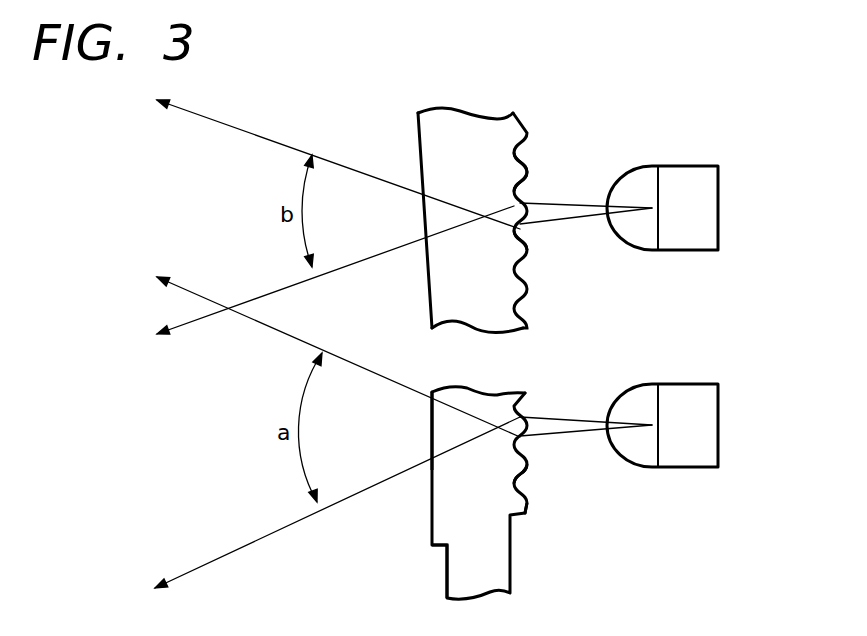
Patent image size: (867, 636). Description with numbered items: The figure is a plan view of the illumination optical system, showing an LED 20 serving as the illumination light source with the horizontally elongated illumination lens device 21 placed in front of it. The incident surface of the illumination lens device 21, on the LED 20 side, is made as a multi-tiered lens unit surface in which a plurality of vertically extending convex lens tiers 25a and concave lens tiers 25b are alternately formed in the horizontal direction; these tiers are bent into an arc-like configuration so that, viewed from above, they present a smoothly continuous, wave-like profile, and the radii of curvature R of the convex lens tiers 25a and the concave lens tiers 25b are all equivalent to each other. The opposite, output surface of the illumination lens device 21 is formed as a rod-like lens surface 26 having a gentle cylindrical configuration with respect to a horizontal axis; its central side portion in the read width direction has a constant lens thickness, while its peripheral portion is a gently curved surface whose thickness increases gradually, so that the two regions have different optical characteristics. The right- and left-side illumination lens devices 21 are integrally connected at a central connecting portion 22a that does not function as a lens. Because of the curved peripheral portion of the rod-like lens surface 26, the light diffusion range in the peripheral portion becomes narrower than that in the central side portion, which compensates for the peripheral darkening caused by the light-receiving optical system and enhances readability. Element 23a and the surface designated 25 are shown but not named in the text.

The LED 20 is at (718, 212).
The illumination lens device 21 is at (425, 510).
The connecting portion 22a is at (445, 575).
The reflecting member 23a is at (417, 147).
The wavy reflecting surface 25 is at (523, 153).
The convex lens tiers 25a is at (528, 173).
The concave lens tiers 25b is at (518, 193).
The rod-like lens surface 26 is at (430, 428).
The radius of curvature R is at (518, 252).